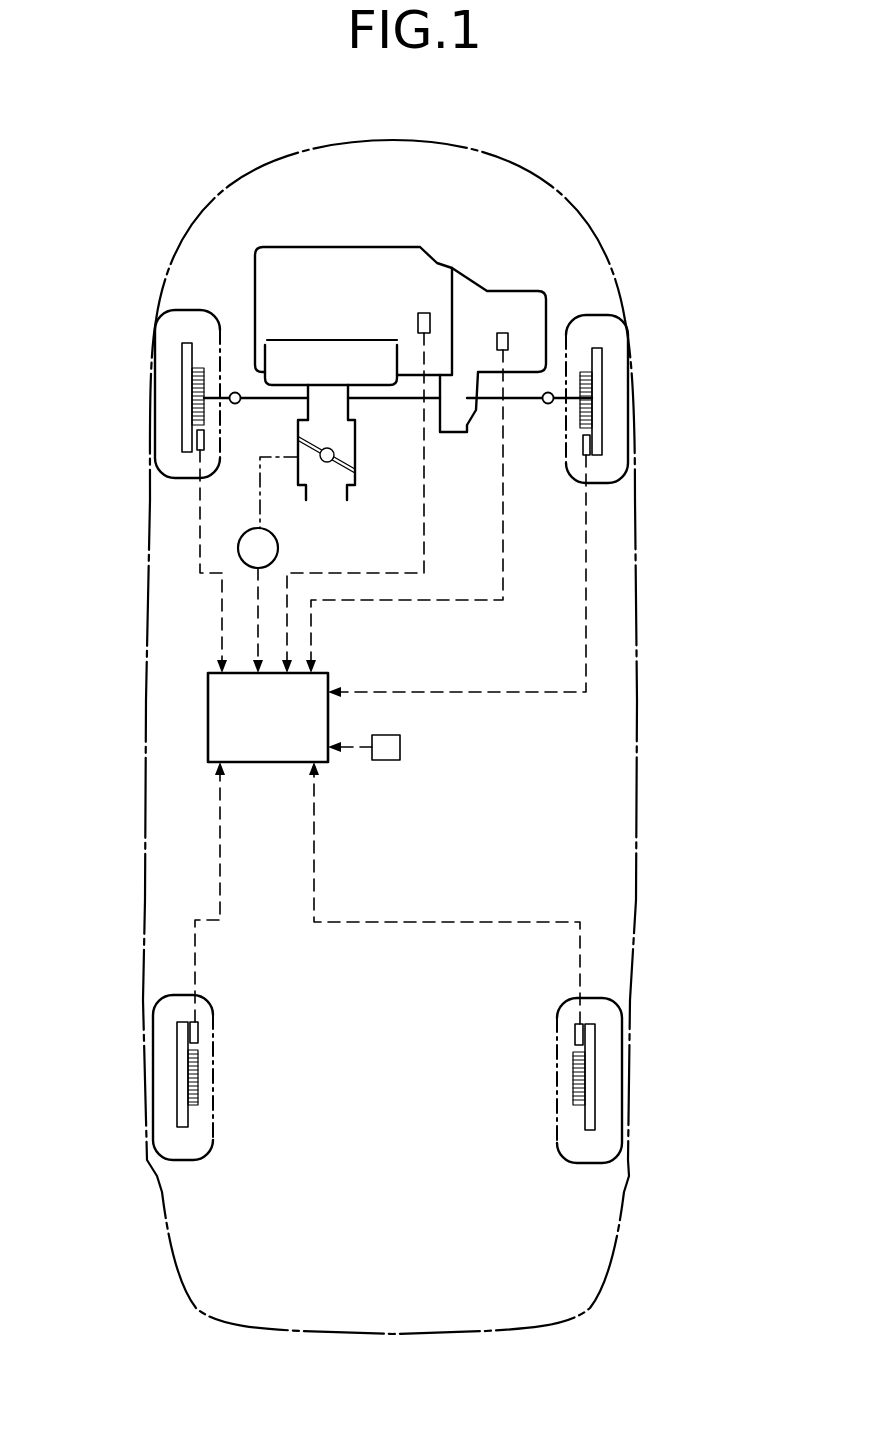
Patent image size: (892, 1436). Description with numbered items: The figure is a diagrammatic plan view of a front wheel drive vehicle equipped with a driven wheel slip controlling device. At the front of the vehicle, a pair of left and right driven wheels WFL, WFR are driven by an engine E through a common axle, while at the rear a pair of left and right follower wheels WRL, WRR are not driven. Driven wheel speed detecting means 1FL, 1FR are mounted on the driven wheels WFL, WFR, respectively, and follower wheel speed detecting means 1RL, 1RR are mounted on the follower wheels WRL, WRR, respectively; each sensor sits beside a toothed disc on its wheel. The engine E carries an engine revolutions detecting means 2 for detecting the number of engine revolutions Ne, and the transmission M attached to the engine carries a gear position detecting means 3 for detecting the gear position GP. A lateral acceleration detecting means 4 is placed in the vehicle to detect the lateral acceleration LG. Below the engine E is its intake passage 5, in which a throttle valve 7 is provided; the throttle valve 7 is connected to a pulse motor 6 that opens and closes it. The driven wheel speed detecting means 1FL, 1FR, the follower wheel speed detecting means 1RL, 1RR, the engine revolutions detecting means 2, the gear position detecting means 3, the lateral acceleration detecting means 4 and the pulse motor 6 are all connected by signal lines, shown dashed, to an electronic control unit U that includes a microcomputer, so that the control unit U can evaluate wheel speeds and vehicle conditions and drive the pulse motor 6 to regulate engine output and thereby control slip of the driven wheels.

The driven wheel speed detecting means 1FL is at (207, 445).
The driven wheel speed detecting means 1FR is at (583, 455).
The follower wheel speed detecting means 1RL is at (198, 1033).
The follower wheel speed detecting means 1RR is at (576, 1034).
The engine revolutions detecting means 2 is at (423, 312).
The gear position detecting means 3 is at (502, 333).
The lateral acceleration detecting means 4 is at (399, 752).
The intake passage 5 is at (346, 495).
The pulse motor 6 is at (248, 538).
The throttle valve 7 is at (330, 447).
The engine E is at (342, 238).
The transmission M is at (486, 300).
The electronic control unit U is at (277, 739).
The driven wheel WFL is at (155, 364).
The driven wheel WFR is at (630, 377).
The follower wheel WRL is at (150, 1097).
The follower wheel WRR is at (620, 1108).